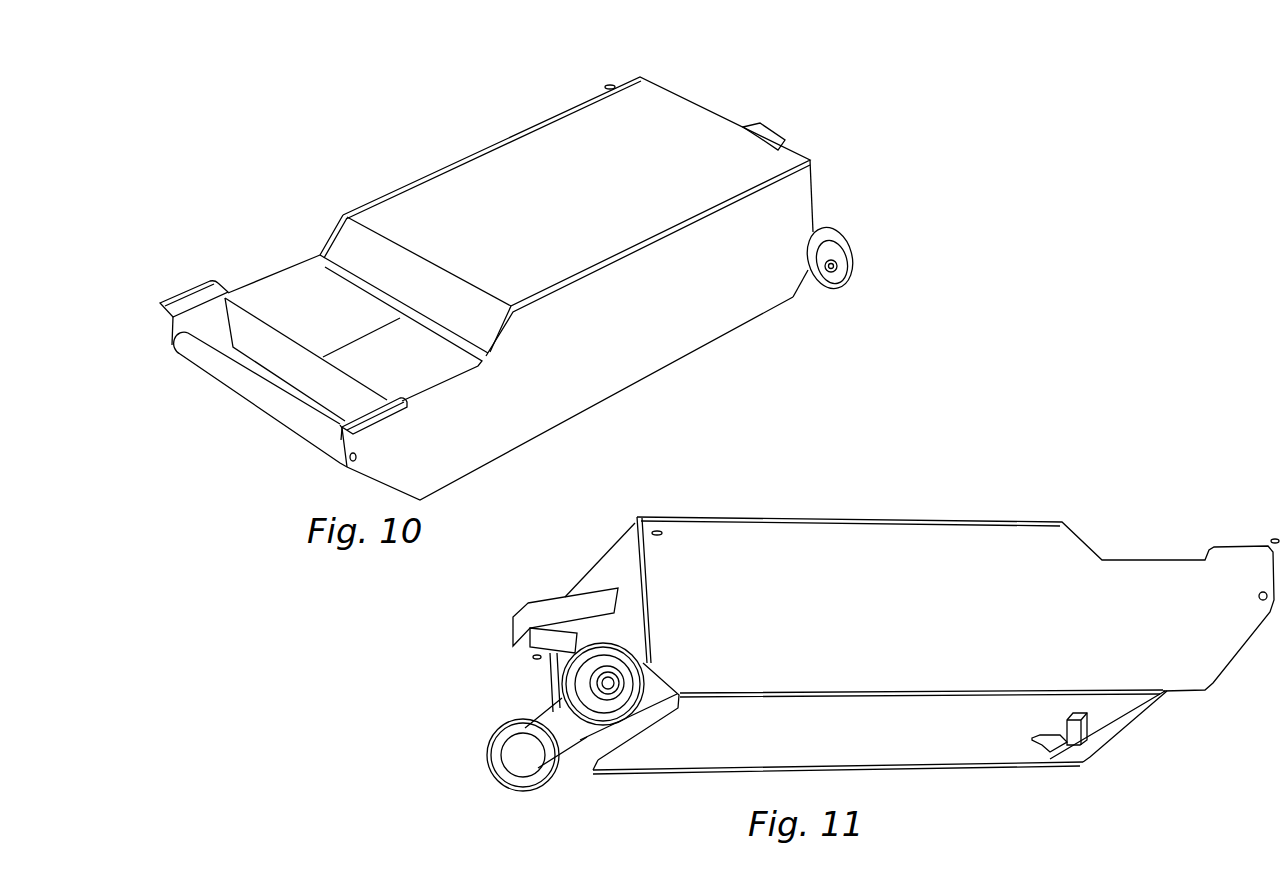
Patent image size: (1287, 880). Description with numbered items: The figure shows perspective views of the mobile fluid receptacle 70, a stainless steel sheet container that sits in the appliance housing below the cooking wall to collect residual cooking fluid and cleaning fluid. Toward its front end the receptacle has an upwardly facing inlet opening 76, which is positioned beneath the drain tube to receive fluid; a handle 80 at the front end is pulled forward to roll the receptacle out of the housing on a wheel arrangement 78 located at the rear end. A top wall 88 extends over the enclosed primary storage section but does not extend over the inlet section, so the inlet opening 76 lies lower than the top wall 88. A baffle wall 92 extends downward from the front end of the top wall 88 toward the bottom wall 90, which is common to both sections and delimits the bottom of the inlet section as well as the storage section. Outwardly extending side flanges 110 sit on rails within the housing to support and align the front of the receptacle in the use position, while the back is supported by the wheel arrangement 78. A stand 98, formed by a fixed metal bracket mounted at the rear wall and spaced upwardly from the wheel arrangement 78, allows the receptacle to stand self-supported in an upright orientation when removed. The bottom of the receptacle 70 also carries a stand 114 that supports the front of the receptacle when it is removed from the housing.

In FIG. 10, the mobile fluid receptacle 70 is at (709, 91).
In FIG. 10, the inlet opening 76 is at (293, 277).
In FIG. 10, the wheel arrangement 78 is at (844, 284).
In FIG. 11, the wheel arrangement 78 is at (625, 652).
In FIG. 10, the handle 80 is at (270, 407).
In FIG. 10, the top wall 88 is at (527, 172).
In FIG. 11, the bottom wall 90 is at (933, 740).
In FIG. 10, the baffle wall 92 is at (348, 247).
In FIG. 10, the stand 98 is at (773, 128).
In FIG. 11, the stand 98 is at (543, 607).
In FIG. 10, the side flanges 110 is at (187, 300).
In FIG. 11, the stand 114 is at (1078, 730).